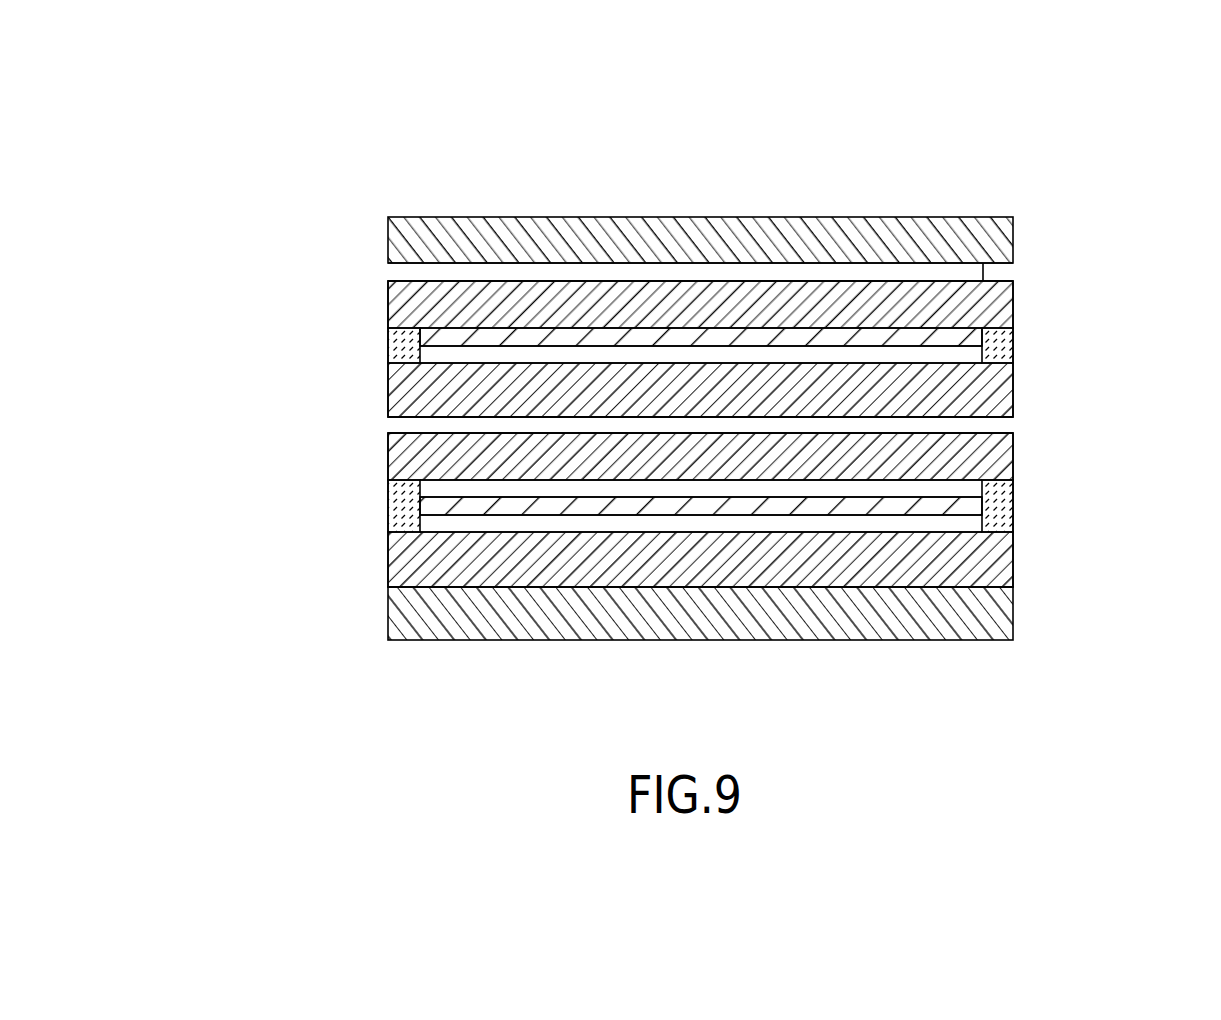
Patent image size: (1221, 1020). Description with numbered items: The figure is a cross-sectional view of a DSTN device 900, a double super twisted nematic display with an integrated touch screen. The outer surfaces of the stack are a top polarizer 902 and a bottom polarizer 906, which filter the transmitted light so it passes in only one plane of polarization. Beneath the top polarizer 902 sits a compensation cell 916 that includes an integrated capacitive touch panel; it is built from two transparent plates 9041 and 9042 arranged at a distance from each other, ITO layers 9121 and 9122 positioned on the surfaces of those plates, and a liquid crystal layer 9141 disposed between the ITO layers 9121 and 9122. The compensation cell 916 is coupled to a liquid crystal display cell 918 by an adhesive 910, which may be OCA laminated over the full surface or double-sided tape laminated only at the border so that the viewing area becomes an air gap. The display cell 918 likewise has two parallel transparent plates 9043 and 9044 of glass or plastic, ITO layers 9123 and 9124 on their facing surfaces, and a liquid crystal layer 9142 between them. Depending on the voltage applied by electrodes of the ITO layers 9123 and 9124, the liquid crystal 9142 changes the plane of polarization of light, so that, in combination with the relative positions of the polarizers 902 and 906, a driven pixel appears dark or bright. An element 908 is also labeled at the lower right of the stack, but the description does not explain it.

The DSTN device 900 is at (1028, 175).
The top polarizer 902 is at (437, 218).
The transparent plate 9041 is at (403, 312).
The transparent plate 9042 is at (403, 397).
The transparent plate 9043 is at (403, 463).
The transparent plate 9044 is at (390, 564).
The bottom polarizer 906 is at (408, 640).
The spacer 908 is at (1002, 521).
The adhesive 910 is at (998, 426).
The ITO layer 9121 is at (440, 278).
The ITO layer 9122 is at (967, 352).
The ITO layer 9123 is at (996, 485).
The ITO layer 9124 is at (442, 526).
The liquid crystal layer 9141 is at (968, 338).
The liquid crystal layer 9142 is at (437, 506).
The compensation cell 916 is at (243, 262).
The liquid crystal display cell 918 is at (243, 433).